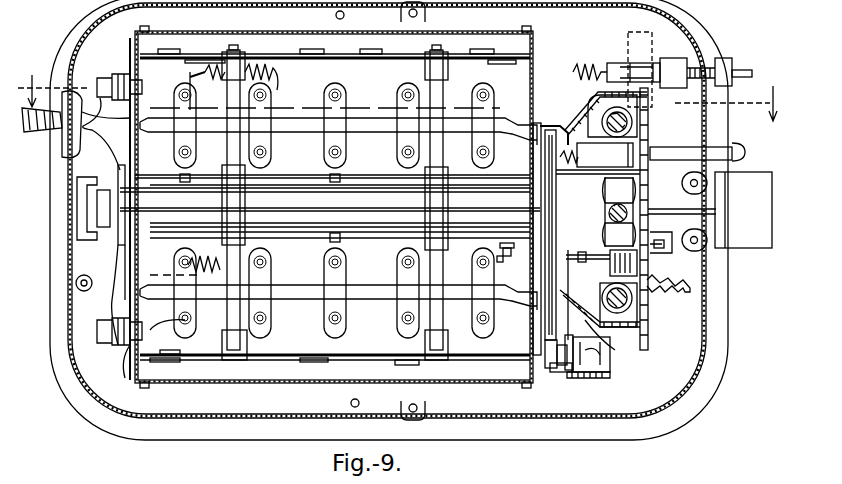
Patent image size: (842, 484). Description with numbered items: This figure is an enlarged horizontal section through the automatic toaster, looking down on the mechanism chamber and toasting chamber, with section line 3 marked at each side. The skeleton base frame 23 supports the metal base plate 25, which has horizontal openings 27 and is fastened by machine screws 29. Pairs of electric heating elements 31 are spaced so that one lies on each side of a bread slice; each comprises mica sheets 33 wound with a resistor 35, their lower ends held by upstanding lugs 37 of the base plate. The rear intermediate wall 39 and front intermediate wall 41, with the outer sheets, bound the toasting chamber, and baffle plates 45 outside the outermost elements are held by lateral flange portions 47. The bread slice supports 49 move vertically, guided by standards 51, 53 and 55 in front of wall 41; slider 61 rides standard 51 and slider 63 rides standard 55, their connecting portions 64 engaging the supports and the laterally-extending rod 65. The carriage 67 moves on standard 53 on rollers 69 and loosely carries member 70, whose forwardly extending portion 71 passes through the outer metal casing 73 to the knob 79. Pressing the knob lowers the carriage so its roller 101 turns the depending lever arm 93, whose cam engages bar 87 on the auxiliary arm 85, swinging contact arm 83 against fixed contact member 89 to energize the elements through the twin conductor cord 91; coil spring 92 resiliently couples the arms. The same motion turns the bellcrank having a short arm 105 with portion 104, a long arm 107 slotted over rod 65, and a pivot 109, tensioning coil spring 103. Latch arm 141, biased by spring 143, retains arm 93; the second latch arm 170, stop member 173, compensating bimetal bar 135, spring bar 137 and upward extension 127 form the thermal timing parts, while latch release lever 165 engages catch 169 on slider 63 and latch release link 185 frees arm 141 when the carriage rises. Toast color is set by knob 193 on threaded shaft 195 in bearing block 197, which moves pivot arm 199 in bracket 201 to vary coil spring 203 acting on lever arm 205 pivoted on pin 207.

The section line 3- 3 is at (403, 87).
The skeleton base frame 23 is at (145, 436).
The metal base plate 25 is at (672, 373).
The horizontal openings 27 is at (534, 145).
The machine screws 29 is at (401, 14).
The electric heating elements 31 is at (328, 352).
The sheets of electric-insulating material 33 is at (310, 56).
The resistor 35 is at (318, 70).
The upstanding lugs 37 is at (205, 57).
The rear intermediate wall 39 is at (131, 43).
The front intermediate wall 41 is at (534, 36).
The baffle plates 45 is at (470, 33).
The lateral flange portions 47 is at (147, 29).
The bread slice supports 49 is at (360, 118).
The standard 51 is at (630, 298).
The standard 53 is at (608, 212).
The standard 55 is at (603, 124).
The slider 61 is at (626, 317).
The slider 63 is at (607, 92).
The connecting portions 64 is at (575, 118).
The laterally-extending rod 65 is at (520, 184).
The carriage 67 is at (648, 125).
The rollers 69 is at (604, 189).
The member 70 is at (648, 190).
The forwardly extending portion 71 is at (670, 210).
The outer metal casing 73 is at (105, 18).
The knob 79 is at (762, 192).
The contact arm 83 is at (608, 378).
The auxiliary arm 85 is at (572, 373).
The laterally extending bar 87 is at (572, 318).
The fixed contact member 89 is at (560, 345).
The twin conductor cord 91 is at (32, 135).
The coil spring 92 is at (600, 358).
The depending lever arm 93 is at (592, 253).
The roller 101 is at (610, 272).
The coil spring 103 is at (207, 268).
The laterally-extending portion 104 is at (125, 252).
The short depending arm 105 is at (152, 216).
The long arm 107 is at (312, 209).
The pivot 109 is at (135, 180).
The upwardly extending portion 127 is at (80, 222).
The compensating bimetal bar 135 is at (110, 135).
The spring bar 137 is at (96, 200).
The latch arm 141 is at (386, 240).
The spring 143 is at (515, 264).
The latch release lever 165 is at (668, 155).
The catch 169 is at (598, 158).
The second latch arm 170 is at (360, 185).
The stop member 173 is at (330, 175).
The latch release link 185 is at (664, 253).
The knob 193 is at (750, 70).
The shaft 195 is at (704, 68).
The bearing block 197 is at (670, 58).
The pivot arm 199 is at (630, 63).
The bracket 201 is at (640, 32).
The coil spring 203 is at (277, 88).
The lever arm 205 is at (188, 77).
The pivot pin 207 is at (178, 318).